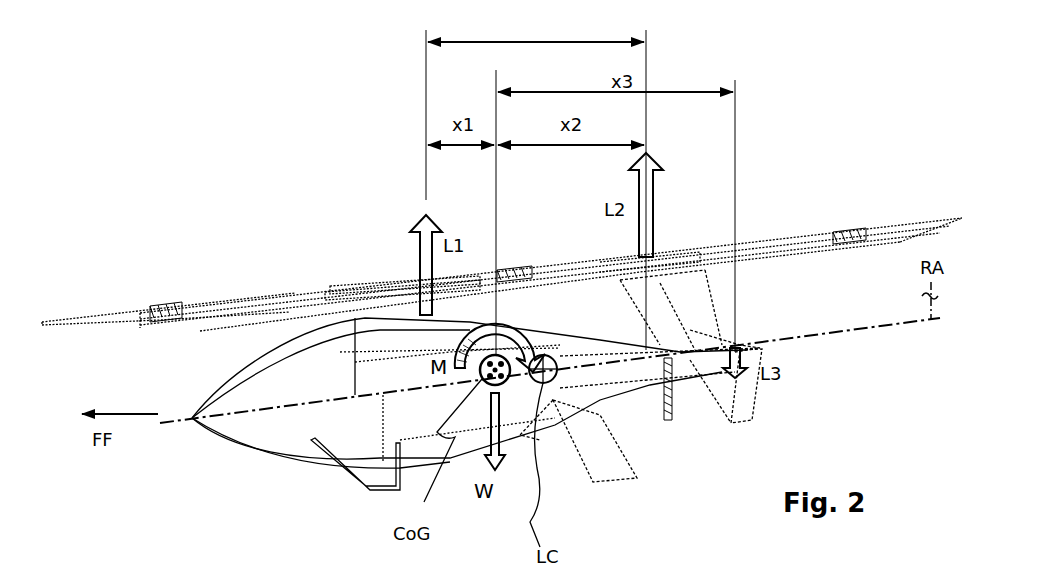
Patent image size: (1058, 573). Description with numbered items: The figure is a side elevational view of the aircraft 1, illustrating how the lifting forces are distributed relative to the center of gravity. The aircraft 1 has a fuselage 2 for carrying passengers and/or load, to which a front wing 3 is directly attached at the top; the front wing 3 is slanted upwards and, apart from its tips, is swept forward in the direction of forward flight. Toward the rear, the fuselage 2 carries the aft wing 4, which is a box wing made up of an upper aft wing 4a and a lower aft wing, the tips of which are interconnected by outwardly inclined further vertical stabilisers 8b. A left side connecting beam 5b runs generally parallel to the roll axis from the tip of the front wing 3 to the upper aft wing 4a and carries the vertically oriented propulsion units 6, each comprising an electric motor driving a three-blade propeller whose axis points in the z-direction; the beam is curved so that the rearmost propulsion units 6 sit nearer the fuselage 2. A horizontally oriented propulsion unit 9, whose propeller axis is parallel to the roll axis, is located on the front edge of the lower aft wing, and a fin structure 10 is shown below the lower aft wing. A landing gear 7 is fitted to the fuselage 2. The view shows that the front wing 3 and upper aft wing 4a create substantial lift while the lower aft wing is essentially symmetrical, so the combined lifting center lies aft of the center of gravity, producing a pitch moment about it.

The aircraft 1 is at (207, 474).
The fuselage 2 is at (275, 383).
The front wing 3 is at (355, 283).
The aft wing 4 is at (704, 248).
The upper aft wing 4a is at (653, 268).
The left side connecting beam 5b is at (293, 303).
The propulsion unit 6 is at (160, 288).
The landing gear 7 is at (363, 493).
The further vertical stabiliser 8b is at (717, 318).
The horizontally oriented propulsion unit 9 is at (677, 376).
The fin structure 10 is at (740, 397).